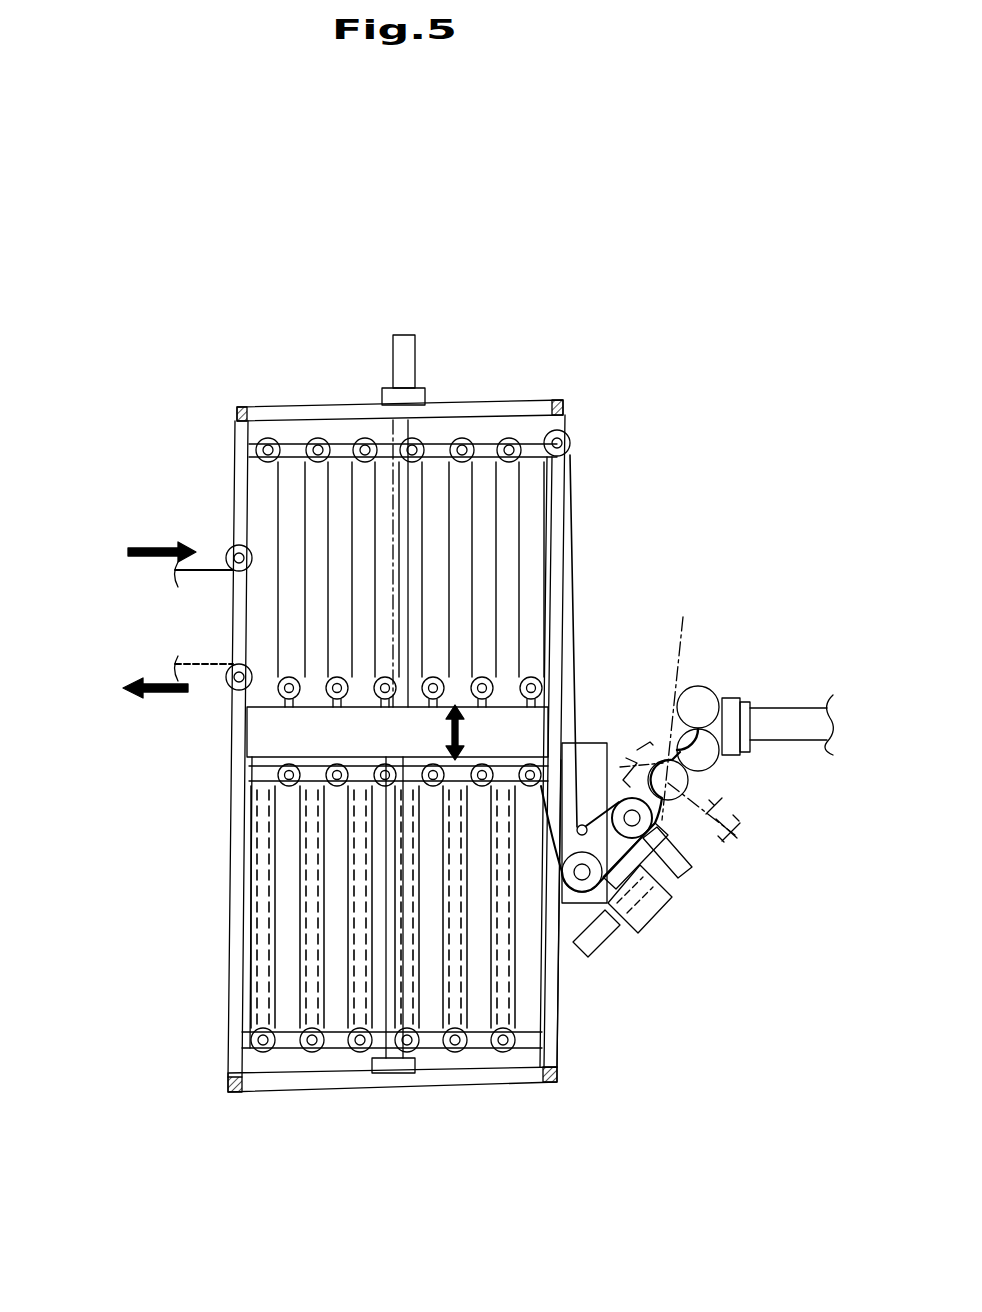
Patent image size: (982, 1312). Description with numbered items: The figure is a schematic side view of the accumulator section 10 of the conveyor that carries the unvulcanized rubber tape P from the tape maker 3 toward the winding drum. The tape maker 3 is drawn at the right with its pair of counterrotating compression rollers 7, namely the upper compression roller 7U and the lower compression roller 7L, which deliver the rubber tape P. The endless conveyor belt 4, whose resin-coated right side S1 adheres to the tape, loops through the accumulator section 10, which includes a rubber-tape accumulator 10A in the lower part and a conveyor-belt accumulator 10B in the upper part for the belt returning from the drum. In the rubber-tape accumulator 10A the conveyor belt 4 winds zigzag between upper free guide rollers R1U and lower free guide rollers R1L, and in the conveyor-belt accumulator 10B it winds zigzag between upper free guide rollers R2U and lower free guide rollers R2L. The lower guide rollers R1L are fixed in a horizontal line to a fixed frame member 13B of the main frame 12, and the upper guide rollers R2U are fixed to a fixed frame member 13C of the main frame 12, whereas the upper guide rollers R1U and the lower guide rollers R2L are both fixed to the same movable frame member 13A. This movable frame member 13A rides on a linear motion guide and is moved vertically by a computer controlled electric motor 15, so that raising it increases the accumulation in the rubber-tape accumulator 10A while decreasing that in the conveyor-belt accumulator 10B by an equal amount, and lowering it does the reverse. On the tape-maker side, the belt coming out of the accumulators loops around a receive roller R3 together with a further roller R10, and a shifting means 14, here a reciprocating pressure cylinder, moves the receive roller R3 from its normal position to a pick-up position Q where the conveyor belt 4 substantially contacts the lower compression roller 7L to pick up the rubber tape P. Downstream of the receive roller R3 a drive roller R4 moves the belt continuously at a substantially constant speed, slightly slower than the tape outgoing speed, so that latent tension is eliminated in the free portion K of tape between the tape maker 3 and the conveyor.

The accumulator section 10 is at (517, 378).
The rubber-tape accumulator 10A is at (215, 1042).
The conveyor-belt accumulator 10B is at (222, 484).
The conveyor belt 4 is at (573, 520).
The main frame 12 is at (560, 993).
The electric motor 15 is at (417, 353).
The movable frame member 13A is at (273, 730).
The fixed frame member 13B is at (525, 1048).
The fixed frame member 13C is at (553, 430).
The upper free guide rollers R1U is at (278, 785).
The lower free guide rollers R1L is at (258, 1052).
The upper free guide rollers R2U is at (270, 438).
The lower free guide rollers R2L is at (328, 684).
The right side S1 is at (573, 590).
The guide roller R10 is at (583, 826).
The receive roller R3 is at (707, 877).
The drive roller R4 is at (650, 913).
The means for shifting the receive roller 14 is at (604, 934).
The compression rollers 7 is at (777, 675).
The upper compression roller 7U is at (705, 703).
The lower compression roller 7L is at (712, 750).
The tape maker 3 is at (787, 758).
The rubber tape P is at (679, 703).
The pick-up position Q is at (688, 788).
The free portion K is at (641, 759).